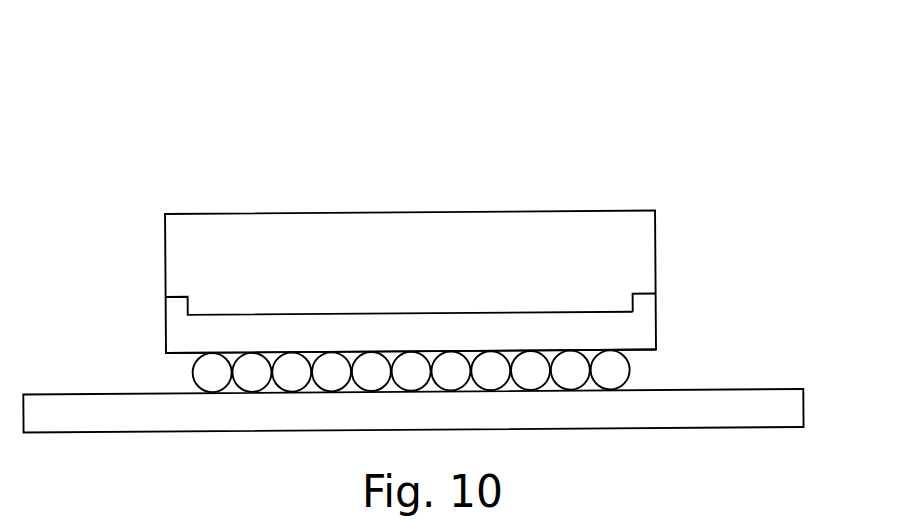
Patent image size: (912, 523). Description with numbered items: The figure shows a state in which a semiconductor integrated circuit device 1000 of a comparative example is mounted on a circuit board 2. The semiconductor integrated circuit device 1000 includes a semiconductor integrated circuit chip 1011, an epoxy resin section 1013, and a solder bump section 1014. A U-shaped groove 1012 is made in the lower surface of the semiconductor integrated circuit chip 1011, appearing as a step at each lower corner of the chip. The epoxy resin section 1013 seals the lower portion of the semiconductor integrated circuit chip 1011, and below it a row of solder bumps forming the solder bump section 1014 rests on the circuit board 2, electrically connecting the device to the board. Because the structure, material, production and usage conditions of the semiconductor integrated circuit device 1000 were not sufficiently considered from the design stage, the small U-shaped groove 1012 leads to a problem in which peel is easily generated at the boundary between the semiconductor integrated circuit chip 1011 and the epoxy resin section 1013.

The semiconductor integrated circuit device 1000 is at (420, 126).
The semiconductor integrated circuit chip 1011 is at (544, 227).
The U-shaped groove 1012 is at (643, 302).
The epoxy resin section 1013 is at (637, 338).
The solder bump section 1014 is at (608, 370).
The circuit board 2 is at (777, 408).